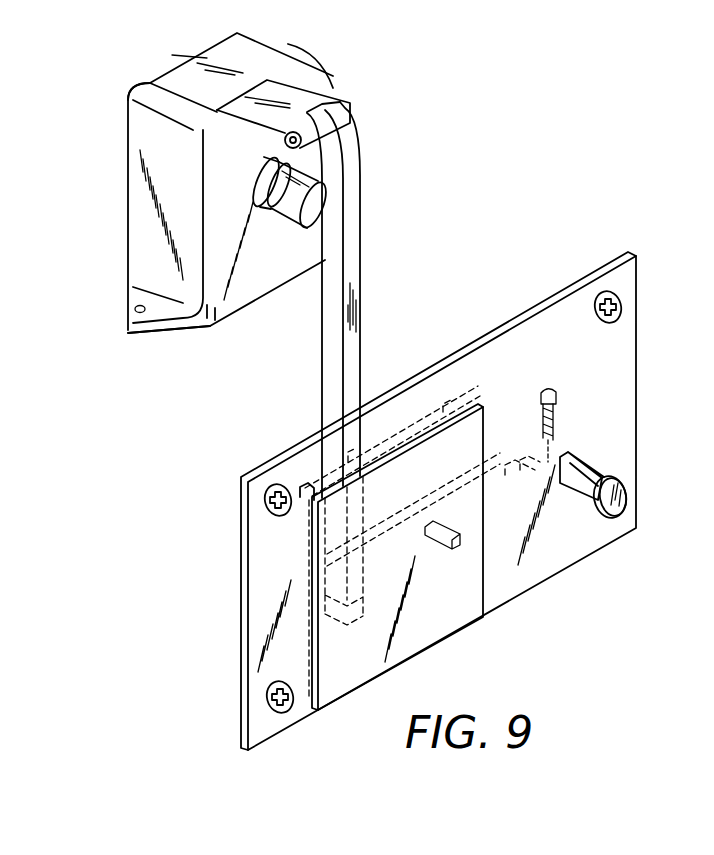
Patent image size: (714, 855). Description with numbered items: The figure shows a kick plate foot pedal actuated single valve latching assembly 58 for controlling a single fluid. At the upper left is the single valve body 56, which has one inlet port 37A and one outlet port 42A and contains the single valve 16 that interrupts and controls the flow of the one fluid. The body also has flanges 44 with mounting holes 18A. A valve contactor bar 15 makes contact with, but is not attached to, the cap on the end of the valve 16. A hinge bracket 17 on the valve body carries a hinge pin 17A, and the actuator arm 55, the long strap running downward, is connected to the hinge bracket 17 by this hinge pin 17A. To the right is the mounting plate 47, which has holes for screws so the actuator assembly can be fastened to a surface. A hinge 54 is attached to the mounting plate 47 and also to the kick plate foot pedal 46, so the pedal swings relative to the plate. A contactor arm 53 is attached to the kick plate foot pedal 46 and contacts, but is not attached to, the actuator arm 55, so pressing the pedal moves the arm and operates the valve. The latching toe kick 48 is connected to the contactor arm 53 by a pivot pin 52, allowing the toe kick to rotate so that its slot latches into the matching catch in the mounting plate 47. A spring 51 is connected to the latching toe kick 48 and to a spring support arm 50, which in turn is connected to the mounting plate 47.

The valve body 56 is at (300, 57).
The hinge pin 17A is at (170, 89).
The hinge bracket 17 is at (320, 103).
The inlet port 37A is at (188, 143).
The outlet port 42A is at (184, 228).
The valve contactor bar 15 is at (320, 200).
The mounting holes 18A is at (130, 292).
The flanges 44 is at (128, 330).
The valve 16 is at (283, 203).
The actuator arm 55 is at (322, 373).
The contactor arm 53 is at (500, 466).
The pivot pin 52 is at (522, 468).
The spring support arm 50 is at (556, 392).
The spring 51 is at (553, 425).
The latching toe kick 48 is at (624, 497).
The mounting plate 47 is at (540, 565).
The kick plate foot pedal 46 is at (428, 630).
The kick plate foot pedal actuated single valve latching assembly 58 is at (177, 517).
The hinge 54 is at (300, 495).